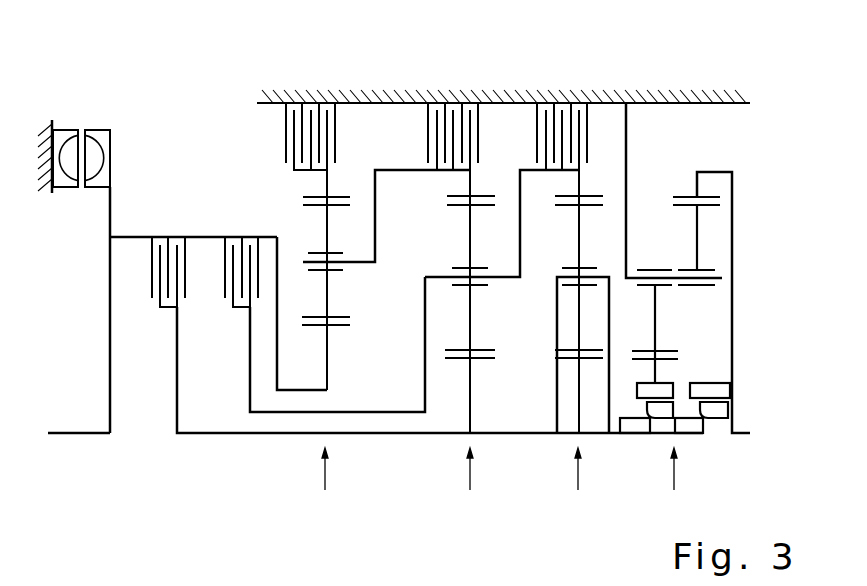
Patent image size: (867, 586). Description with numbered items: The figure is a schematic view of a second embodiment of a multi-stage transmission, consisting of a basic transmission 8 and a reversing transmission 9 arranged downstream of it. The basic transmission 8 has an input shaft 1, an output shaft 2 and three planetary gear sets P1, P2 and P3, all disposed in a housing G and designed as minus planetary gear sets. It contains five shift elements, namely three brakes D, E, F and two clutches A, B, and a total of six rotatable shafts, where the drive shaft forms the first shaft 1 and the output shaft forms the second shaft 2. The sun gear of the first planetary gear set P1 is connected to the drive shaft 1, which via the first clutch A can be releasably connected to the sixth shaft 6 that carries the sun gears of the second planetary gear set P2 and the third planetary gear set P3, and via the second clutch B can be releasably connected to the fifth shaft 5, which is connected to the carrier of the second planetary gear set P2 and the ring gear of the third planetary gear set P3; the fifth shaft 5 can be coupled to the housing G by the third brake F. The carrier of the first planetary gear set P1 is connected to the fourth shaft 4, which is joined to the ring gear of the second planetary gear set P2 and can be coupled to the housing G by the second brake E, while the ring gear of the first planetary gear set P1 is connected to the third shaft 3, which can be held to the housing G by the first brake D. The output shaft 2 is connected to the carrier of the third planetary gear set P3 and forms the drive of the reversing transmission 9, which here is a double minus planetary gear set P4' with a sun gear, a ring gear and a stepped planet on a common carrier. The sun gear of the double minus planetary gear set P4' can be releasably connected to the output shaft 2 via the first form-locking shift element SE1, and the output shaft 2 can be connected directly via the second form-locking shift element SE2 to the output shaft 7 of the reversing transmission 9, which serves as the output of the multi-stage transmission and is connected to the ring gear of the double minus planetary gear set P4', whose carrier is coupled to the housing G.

The input shaft 1 is at (278, 370).
The output shaft 2 is at (609, 397).
The third shaft 3 is at (327, 187).
The fourth shaft 4 is at (377, 190).
The fifth shaft 5 is at (428, 388).
The sixth shaft 6 is at (177, 375).
The output shaft of the reversing transmission 7 is at (733, 325).
The basic transmission 8 is at (366, 347).
The reversing transmission 9 is at (736, 252).
The first clutch A is at (168, 256).
The second clutch B is at (241, 256).
The first brake D is at (310, 113).
The second brake E is at (453, 113).
The third brake F is at (562, 113).
The housing G is at (687, 95).
The first form-locking shift element SE1 is at (674, 167).
The second form-locking shift element SE2 is at (725, 72).
The first planetary gear set P1 is at (323, 488).
The second planetary gear set P2 is at (469, 488).
The third planetary gear set P3 is at (579, 488).
The double minus planetary gear set P4' is at (672, 488).